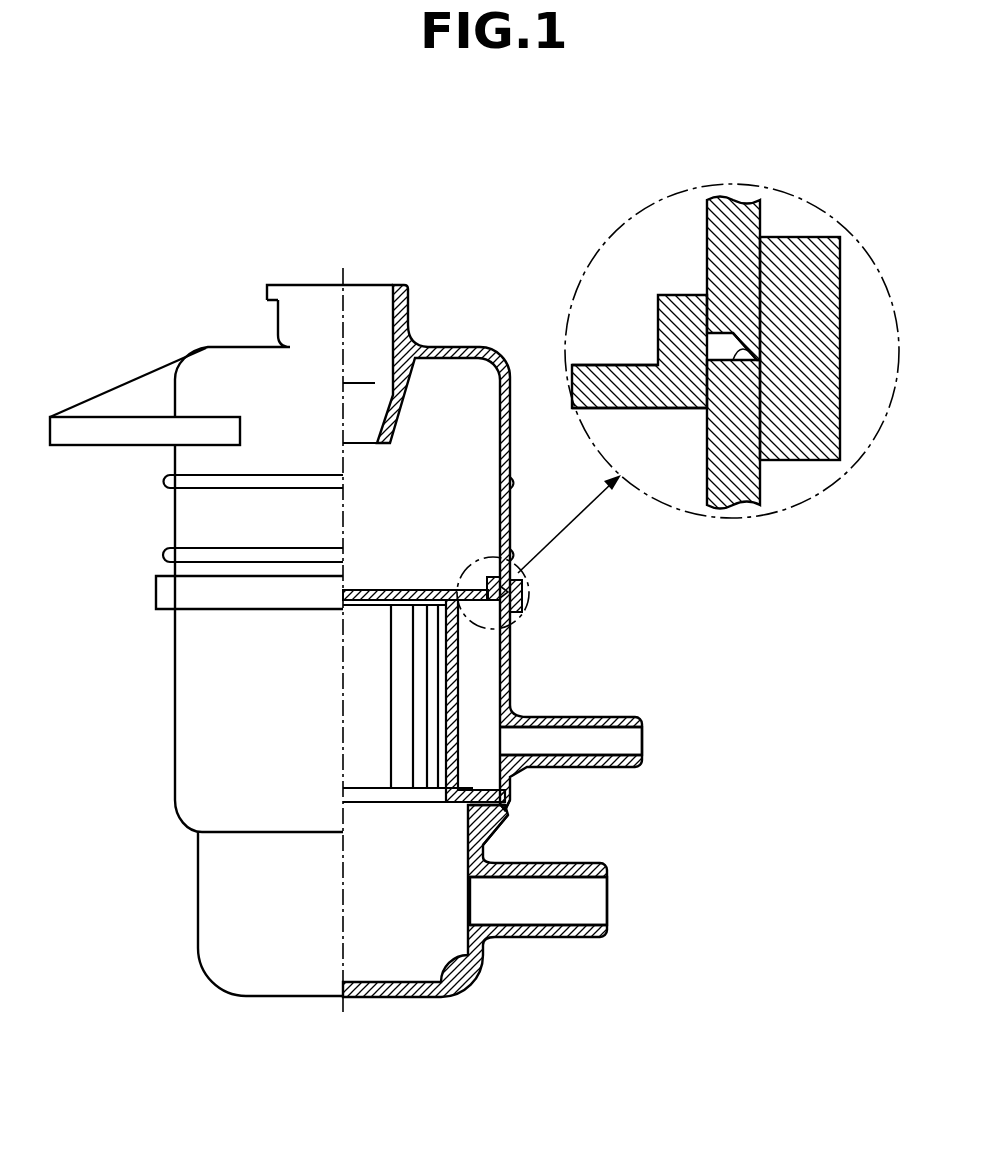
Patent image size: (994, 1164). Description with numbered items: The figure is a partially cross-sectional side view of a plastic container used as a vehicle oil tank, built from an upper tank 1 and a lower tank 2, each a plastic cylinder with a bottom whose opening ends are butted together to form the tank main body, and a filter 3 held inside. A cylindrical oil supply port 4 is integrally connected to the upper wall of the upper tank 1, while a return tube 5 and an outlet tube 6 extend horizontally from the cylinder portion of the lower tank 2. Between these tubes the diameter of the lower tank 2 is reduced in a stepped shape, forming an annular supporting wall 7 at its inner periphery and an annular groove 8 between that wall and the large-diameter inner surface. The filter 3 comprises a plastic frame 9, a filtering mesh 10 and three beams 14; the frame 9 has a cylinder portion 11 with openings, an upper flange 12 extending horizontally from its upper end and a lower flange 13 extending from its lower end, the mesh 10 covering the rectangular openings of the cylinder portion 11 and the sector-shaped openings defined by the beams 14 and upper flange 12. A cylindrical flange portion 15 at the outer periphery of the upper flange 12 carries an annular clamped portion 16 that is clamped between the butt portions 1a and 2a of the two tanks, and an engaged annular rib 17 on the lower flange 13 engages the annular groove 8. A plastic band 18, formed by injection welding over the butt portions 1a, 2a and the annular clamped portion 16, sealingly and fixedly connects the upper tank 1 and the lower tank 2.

The upper tank 1 is at (203, 345).
The butt portion of upper tank 1a is at (737, 337).
The lower tank 2 is at (222, 962).
The butt portion of lower tank 2a is at (807, 392).
The filter 3 is at (472, 675).
The cylindrical oil supply port 4 is at (378, 300).
The return tube 5 is at (630, 770).
The outlet tube 6 is at (583, 938).
The annular supporting wall 7 is at (468, 812).
The annular groove 8 is at (503, 812).
The frame 9 is at (264, 625).
The filtering mesh 10 is at (377, 745).
The cylinder portion 11 is at (447, 702).
The upper flange 12 is at (463, 610).
The lower flange 13 is at (455, 798).
The beams 14 is at (373, 590).
The cylindrical flange portion 15 is at (497, 579).
The annular clamped portion 16 is at (506, 591).
The engaged annular rib 17 is at (470, 840).
The plastic band 18 is at (518, 606).